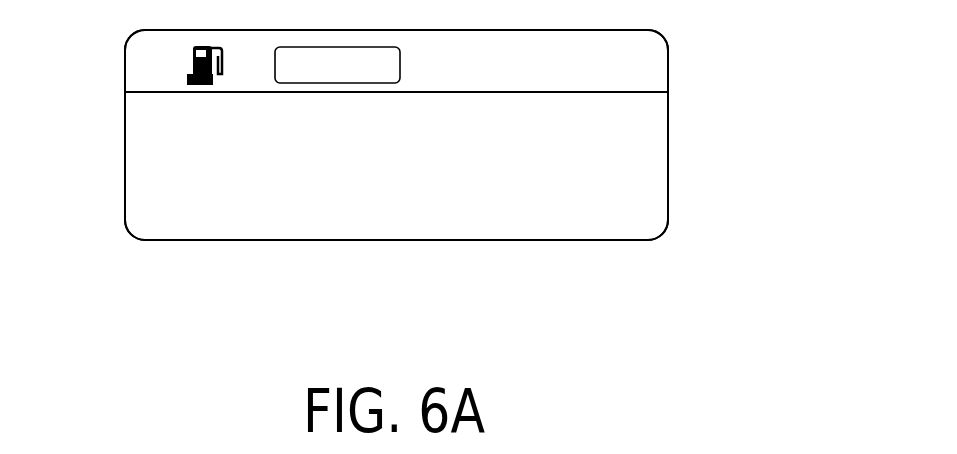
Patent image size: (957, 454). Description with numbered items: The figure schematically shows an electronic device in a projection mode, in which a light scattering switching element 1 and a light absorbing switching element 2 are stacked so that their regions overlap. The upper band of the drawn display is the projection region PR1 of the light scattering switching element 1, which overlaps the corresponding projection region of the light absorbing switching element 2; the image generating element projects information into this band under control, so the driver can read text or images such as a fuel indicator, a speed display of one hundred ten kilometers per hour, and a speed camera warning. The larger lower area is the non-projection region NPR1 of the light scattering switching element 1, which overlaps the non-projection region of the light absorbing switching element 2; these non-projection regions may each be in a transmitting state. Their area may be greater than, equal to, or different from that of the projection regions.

The light scattering switching element 1 is at (125, 168).
The light absorbing switching element 2 is at (396, 135).
The projection region PR1 is at (655, 68).
The non-projection region NPR1 is at (655, 157).